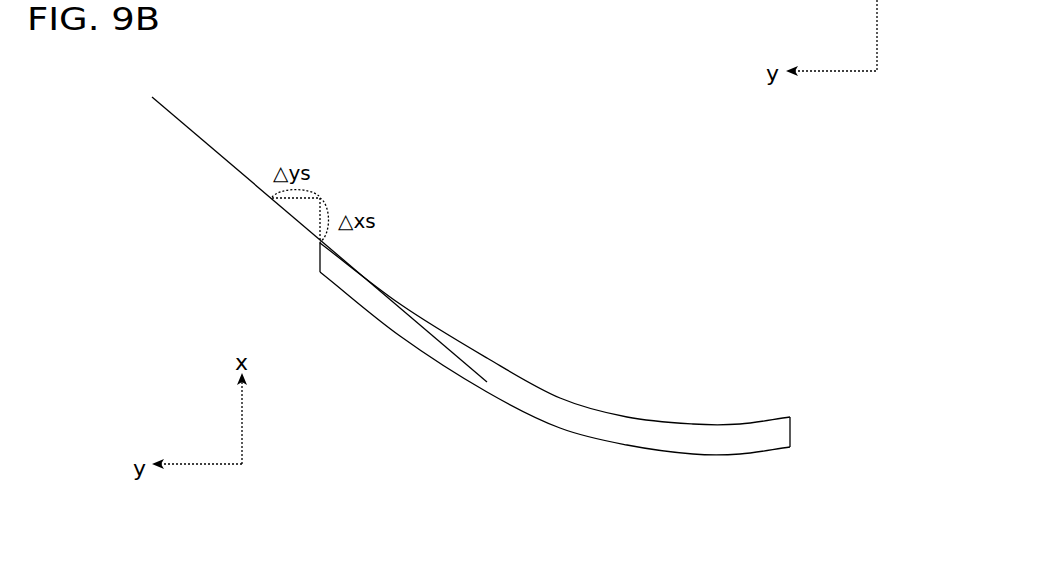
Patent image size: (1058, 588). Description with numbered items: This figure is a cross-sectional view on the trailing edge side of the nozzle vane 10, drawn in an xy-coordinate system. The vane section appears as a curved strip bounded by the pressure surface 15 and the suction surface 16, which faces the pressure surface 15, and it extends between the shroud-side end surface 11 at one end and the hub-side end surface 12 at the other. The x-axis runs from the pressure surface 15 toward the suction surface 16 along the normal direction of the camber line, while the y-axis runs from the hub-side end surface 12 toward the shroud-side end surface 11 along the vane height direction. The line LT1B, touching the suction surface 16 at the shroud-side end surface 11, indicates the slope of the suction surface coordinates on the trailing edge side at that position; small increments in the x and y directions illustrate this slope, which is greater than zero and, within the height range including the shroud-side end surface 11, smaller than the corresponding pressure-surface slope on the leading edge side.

The nozzle vane 10 is at (560, 363).
The shroud-side end surface 11 is at (318, 253).
The hub-side end surface 12 is at (791, 425).
The pressure surface 15 is at (537, 420).
The suction surface 16 is at (537, 388).
The line LT1B is at (178, 118).